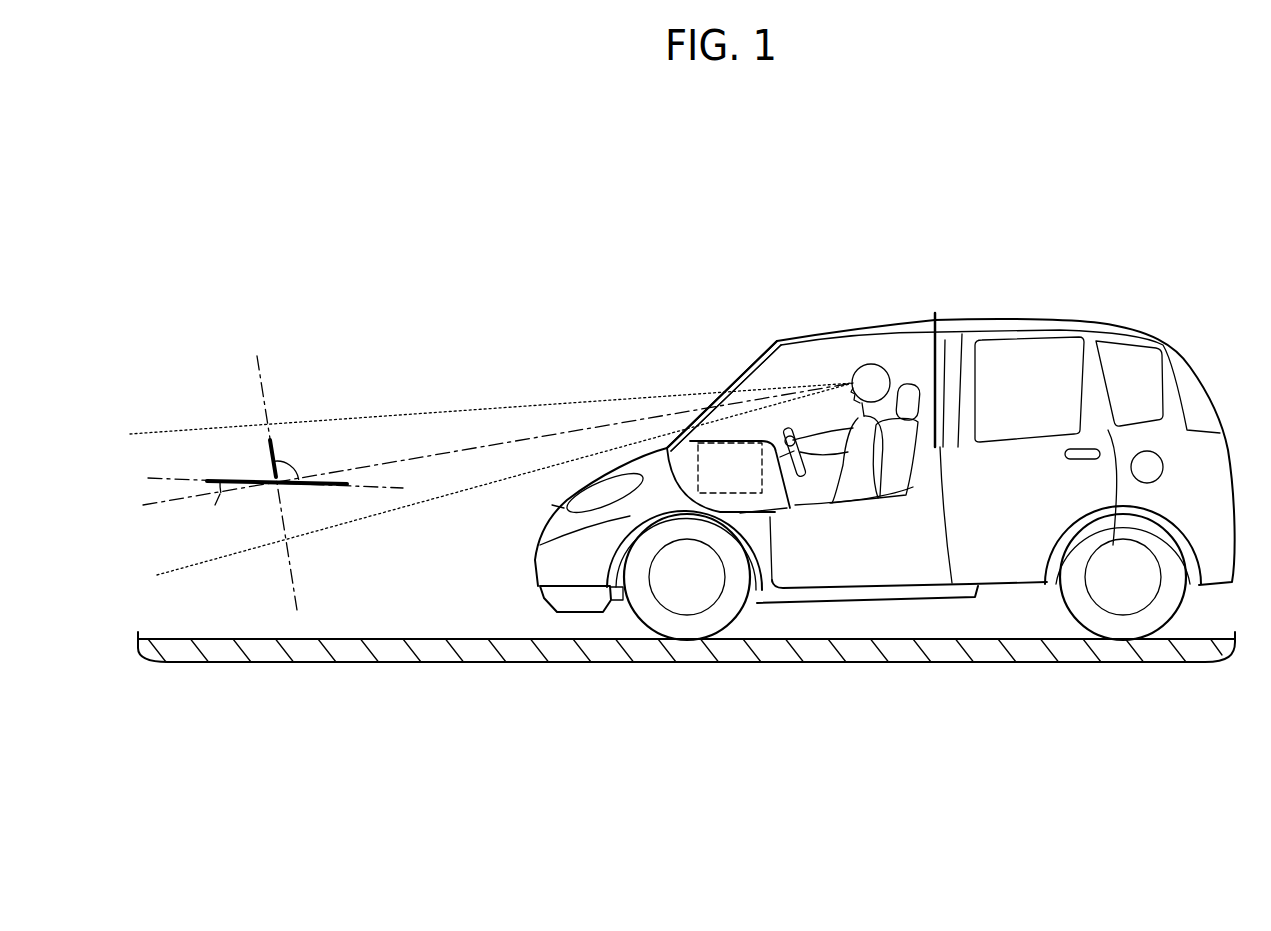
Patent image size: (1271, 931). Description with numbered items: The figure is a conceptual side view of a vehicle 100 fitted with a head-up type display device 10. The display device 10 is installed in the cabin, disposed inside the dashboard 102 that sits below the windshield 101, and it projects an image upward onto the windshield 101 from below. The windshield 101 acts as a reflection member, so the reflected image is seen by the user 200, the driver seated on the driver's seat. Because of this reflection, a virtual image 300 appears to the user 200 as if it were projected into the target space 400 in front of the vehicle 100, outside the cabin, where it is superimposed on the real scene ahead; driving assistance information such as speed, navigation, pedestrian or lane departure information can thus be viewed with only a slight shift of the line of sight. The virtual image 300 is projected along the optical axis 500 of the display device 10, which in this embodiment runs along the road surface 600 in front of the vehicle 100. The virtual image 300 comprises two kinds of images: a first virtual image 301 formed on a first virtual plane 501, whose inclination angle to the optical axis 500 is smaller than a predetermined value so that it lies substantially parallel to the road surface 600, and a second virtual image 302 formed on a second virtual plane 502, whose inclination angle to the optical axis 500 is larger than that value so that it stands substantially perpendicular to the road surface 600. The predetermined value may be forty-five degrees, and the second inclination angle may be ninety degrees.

The vehicle 100 is at (1159, 331).
The windshield 101 is at (747, 378).
The dashboard 102 is at (773, 498).
The display device 10 is at (698, 474).
The user 200 is at (881, 367).
The virtual image 300 is at (285, 417).
The first virtual image 301 is at (333, 478).
The second virtual image 302 is at (293, 430).
The target space 400 is at (517, 407).
The optical axis 500 is at (170, 500).
The first virtual plane 501 is at (185, 477).
The second virtual plane 502 is at (257, 356).
The road surface 600 is at (424, 639).